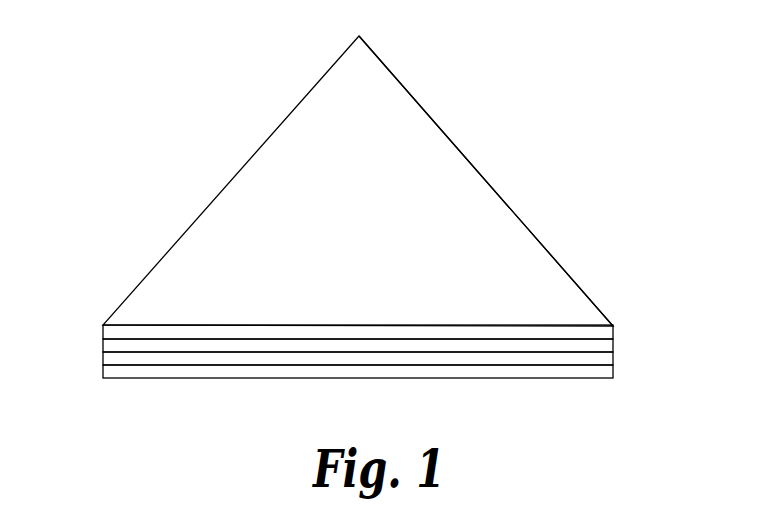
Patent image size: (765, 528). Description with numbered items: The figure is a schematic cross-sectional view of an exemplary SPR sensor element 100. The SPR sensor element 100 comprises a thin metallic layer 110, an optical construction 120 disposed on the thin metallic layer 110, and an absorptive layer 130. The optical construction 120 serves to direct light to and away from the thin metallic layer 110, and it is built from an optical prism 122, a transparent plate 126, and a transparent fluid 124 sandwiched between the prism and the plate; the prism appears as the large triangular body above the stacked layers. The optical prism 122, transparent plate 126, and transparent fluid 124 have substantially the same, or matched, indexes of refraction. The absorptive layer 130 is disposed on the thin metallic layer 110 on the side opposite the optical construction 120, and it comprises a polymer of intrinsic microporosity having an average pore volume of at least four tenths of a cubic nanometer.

The SPR sensor element 100 is at (515, 80).
The thin metallic layer 110 is at (610, 359).
The optical construction 120 is at (347, 33).
The optical prism 122 is at (483, 202).
The transparent fluid 124 is at (613, 332).
The transparent plate 126 is at (603, 345).
The absorptive layer 130 is at (528, 372).